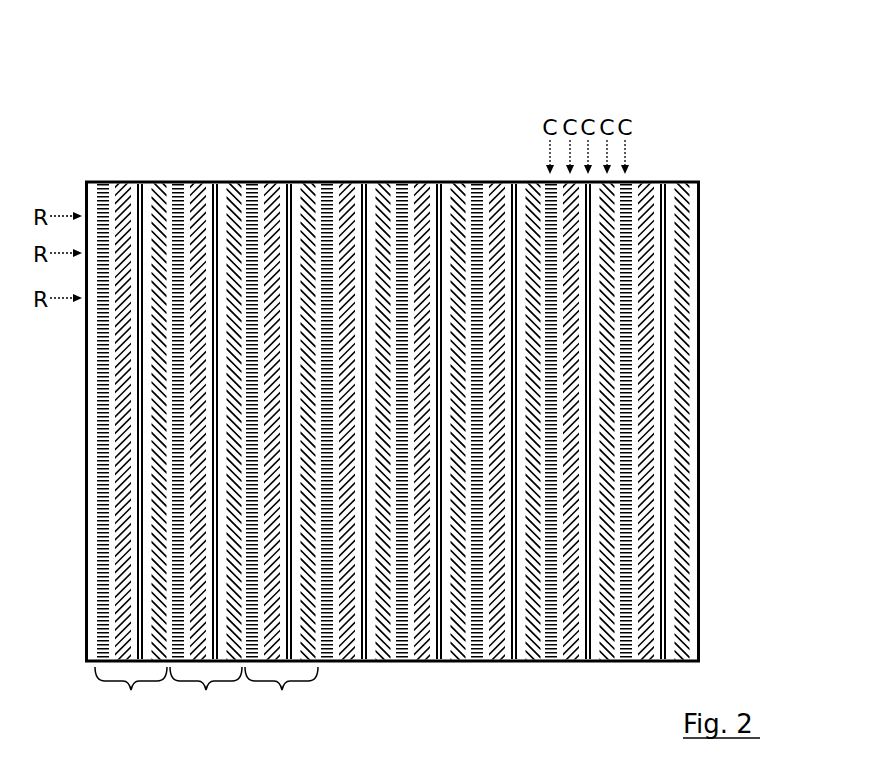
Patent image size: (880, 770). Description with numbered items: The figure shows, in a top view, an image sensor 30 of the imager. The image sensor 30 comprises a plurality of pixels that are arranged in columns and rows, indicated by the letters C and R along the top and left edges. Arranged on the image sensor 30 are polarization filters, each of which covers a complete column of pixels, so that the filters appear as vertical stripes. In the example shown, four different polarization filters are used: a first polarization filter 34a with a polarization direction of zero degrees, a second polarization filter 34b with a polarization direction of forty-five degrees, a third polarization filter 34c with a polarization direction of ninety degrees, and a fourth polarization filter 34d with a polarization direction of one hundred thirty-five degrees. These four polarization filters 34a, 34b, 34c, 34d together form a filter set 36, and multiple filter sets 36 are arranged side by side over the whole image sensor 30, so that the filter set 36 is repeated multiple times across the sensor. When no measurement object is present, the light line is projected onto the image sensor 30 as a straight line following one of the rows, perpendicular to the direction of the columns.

The image sensor 30 is at (515, 112).
The first polarization filter 34a is at (103, 182).
The second polarization filter 34b is at (120, 182).
The third polarization filter 34c is at (139, 182).
The fourth polarization filter 34d is at (165, 182).
The filter set 36 is at (206, 696).